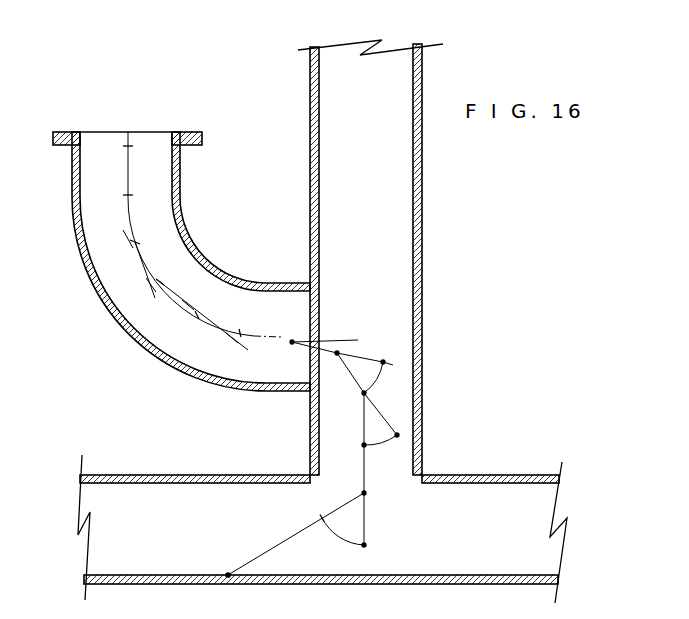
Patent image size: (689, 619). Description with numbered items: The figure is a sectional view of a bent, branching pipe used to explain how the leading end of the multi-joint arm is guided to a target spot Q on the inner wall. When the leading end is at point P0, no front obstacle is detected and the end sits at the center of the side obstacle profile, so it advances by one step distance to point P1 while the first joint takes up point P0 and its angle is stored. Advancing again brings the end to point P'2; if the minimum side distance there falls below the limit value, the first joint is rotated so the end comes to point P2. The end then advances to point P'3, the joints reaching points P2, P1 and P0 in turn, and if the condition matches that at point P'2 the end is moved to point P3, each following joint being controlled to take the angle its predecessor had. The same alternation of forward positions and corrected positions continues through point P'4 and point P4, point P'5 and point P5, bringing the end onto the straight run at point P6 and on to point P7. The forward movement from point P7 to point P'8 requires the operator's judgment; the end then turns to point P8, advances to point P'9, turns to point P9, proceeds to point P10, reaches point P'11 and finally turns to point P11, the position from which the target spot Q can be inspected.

The point P0 is at (142, 148).
The point P1 is at (143, 196).
The point P2 is at (150, 238).
The point P'2 is at (113, 238).
The point P3 is at (175, 278).
The point P'3 is at (134, 288).
The point P4 is at (211, 304).
The point P'4 is at (172, 318).
The point P5 is at (253, 319).
The point P'5 is at (218, 348).
The point P6 is at (300, 326).
The point P7 is at (320, 364).
The point P8 is at (383, 395).
The point P'8 is at (385, 347).
The point P9 is at (349, 445).
The point P'9 is at (388, 452).
The point P10 is at (386, 496).
The point P11 is at (309, 507).
The point P'11 is at (388, 548).
The target spot Q is at (218, 560).